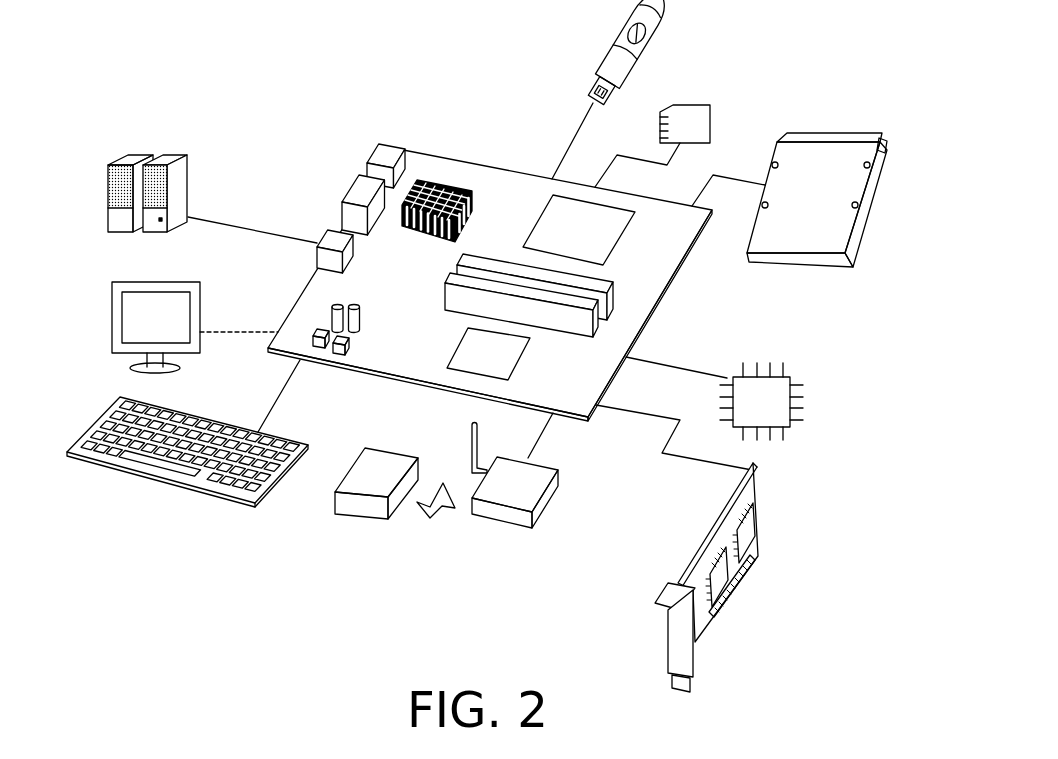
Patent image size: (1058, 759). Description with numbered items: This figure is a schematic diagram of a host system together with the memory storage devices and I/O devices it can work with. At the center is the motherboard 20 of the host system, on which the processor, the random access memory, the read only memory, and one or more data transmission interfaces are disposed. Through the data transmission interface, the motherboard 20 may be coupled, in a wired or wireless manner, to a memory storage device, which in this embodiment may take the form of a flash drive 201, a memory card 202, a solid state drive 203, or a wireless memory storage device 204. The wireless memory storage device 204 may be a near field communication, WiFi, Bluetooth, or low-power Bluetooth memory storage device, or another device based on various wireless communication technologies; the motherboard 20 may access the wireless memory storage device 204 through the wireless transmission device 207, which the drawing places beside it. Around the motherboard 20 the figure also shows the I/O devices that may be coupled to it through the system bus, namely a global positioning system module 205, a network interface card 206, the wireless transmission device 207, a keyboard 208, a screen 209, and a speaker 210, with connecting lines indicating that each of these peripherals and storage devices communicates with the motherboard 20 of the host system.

The motherboard 20 is at (493, 188).
The flash drive 201 is at (613, 43).
The memory card 202 is at (713, 113).
The solid state drive 203 is at (837, 130).
The wireless memory storage device 204 is at (356, 462).
The global positioning system module 205 is at (805, 401).
The network interface card 206 is at (760, 522).
The wireless transmission device 207 is at (550, 508).
The keyboard 208 is at (193, 488).
The screen 209 is at (112, 333).
The speaker 210 is at (105, 220).